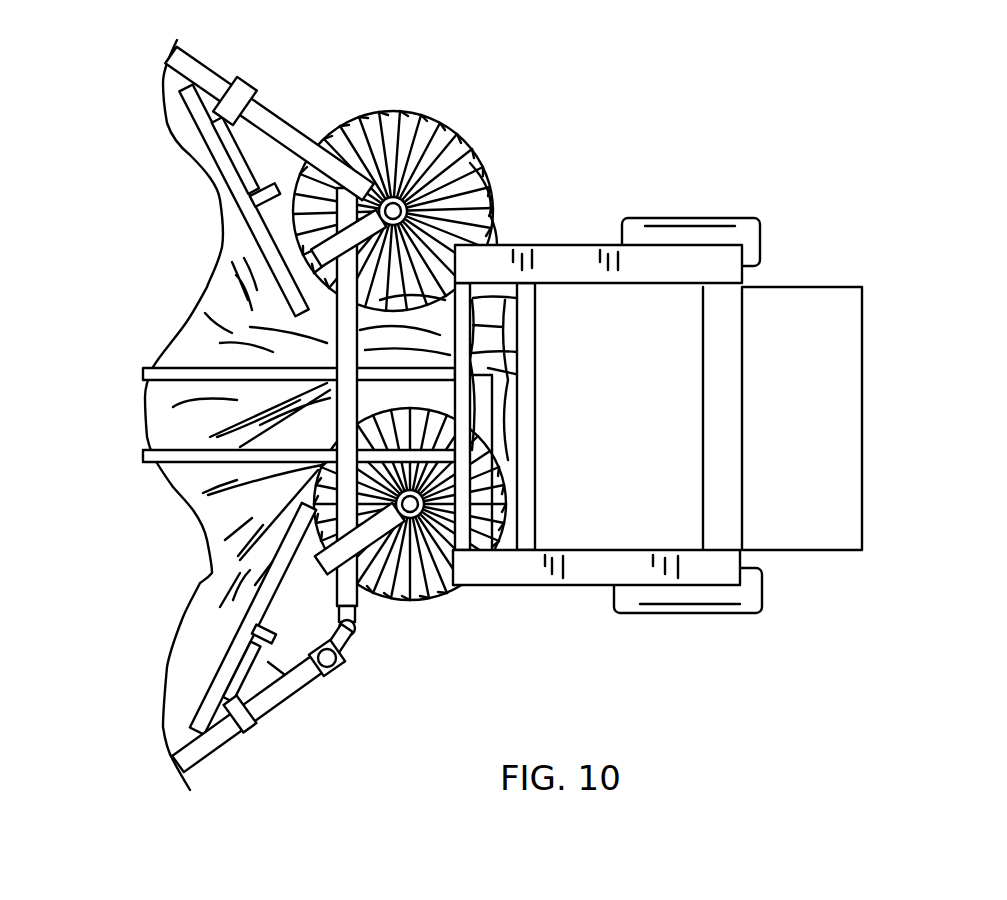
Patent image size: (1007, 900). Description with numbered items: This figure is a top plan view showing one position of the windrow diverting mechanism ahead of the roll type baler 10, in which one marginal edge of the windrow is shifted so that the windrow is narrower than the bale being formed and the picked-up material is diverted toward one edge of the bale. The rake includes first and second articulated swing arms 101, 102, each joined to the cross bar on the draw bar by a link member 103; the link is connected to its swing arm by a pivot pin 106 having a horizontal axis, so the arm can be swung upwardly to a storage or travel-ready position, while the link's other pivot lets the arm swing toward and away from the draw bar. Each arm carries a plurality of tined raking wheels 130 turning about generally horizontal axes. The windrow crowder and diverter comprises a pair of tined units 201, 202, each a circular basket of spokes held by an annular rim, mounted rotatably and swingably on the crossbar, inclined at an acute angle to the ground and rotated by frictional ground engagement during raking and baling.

The roll type baler 10 is at (657, 423).
The first articulated swing arm 101 is at (248, 743).
The second articulated swing arm 102 is at (216, 70).
The link member 103 is at (362, 630).
The pivot pin 106 is at (328, 665).
The tined raking wheel 130 is at (190, 155).
The tined unit 201 is at (505, 670).
The tined unit 202 is at (590, 211).